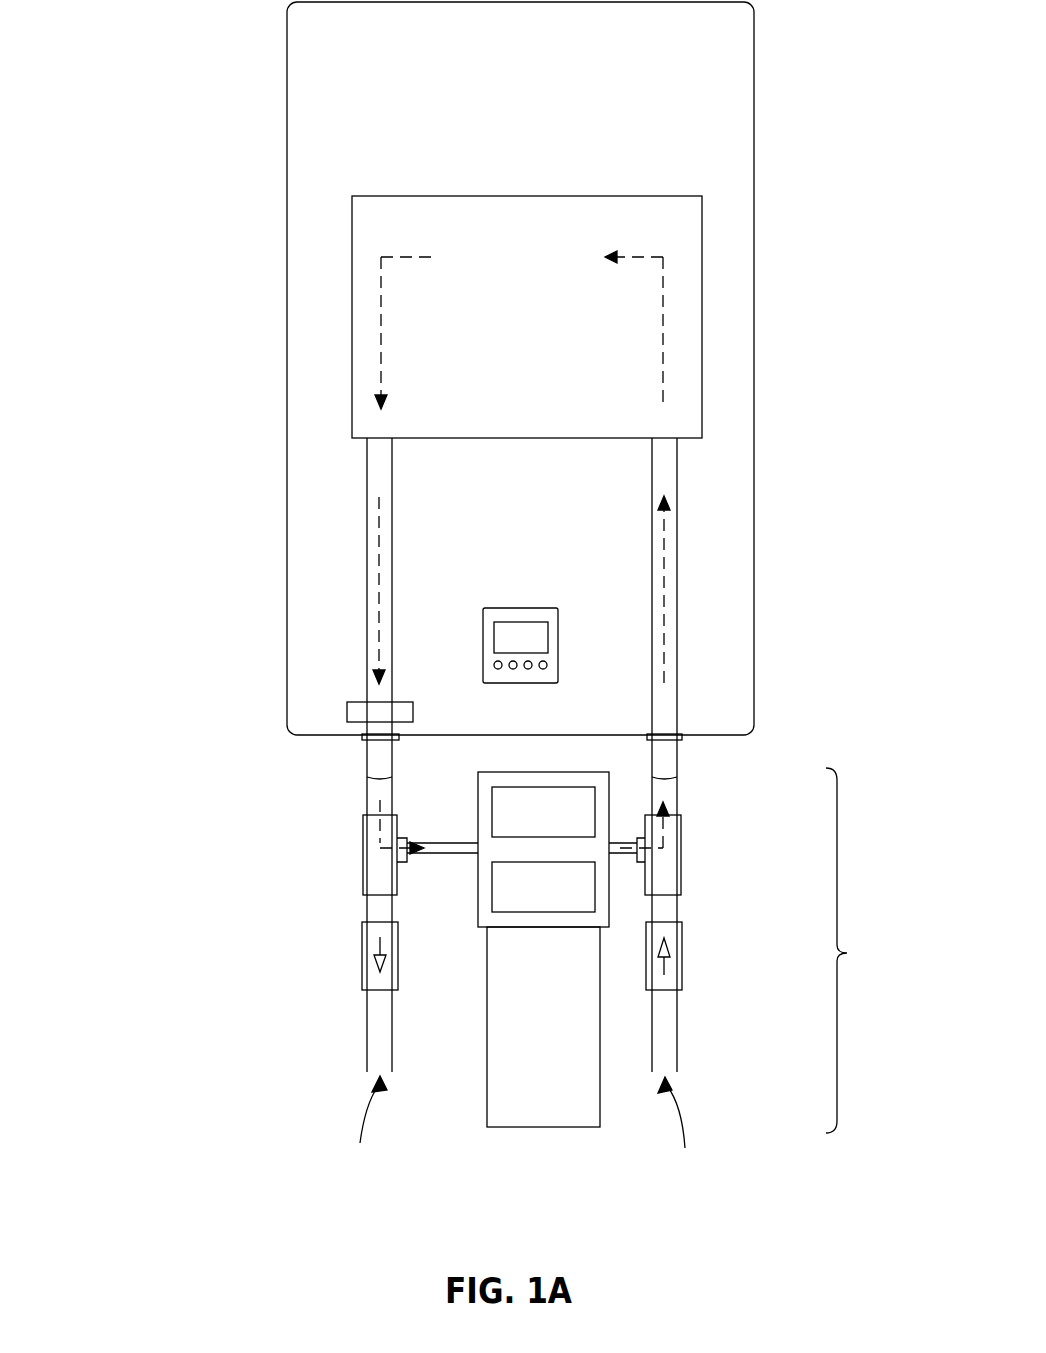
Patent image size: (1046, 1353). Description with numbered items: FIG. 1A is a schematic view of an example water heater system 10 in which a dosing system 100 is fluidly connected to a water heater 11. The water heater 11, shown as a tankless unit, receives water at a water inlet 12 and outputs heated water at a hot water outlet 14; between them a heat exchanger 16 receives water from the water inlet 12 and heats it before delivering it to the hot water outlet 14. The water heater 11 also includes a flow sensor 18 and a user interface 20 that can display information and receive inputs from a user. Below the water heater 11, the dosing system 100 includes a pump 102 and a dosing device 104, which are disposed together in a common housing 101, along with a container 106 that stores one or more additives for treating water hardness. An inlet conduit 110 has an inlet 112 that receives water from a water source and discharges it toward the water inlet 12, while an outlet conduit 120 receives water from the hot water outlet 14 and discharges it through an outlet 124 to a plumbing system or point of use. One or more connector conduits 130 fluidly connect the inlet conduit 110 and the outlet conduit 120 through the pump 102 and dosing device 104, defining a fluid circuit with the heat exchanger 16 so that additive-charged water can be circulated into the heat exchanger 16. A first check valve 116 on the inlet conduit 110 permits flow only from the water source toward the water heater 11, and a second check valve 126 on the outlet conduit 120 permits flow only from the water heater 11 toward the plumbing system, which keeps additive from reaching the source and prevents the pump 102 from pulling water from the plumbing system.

The water heater system 10 is at (460, 368).
The water heater 11 is at (754, 163).
The water inlet 12 is at (678, 748).
The hot water outlet 14 is at (367, 748).
The heat exchanger 16 is at (512, 374).
The flow sensor 18 is at (347, 711).
The user interface 20 is at (558, 666).
The dosing system 100 is at (577, 960).
The common housing 101 is at (520, 877).
The pump 102 is at (524, 824).
The dosing device 104 is at (524, 897).
The container 106 is at (524, 1034).
The inlet conduit 110 is at (720, 875).
The inlet 112 is at (691, 1127).
The first check valve 116 is at (683, 960).
The outlet conduit 120 is at (330, 878).
The outlet 124 is at (355, 1124).
The second check valve 126 is at (360, 960).
The connector conduits 130 is at (465, 842).